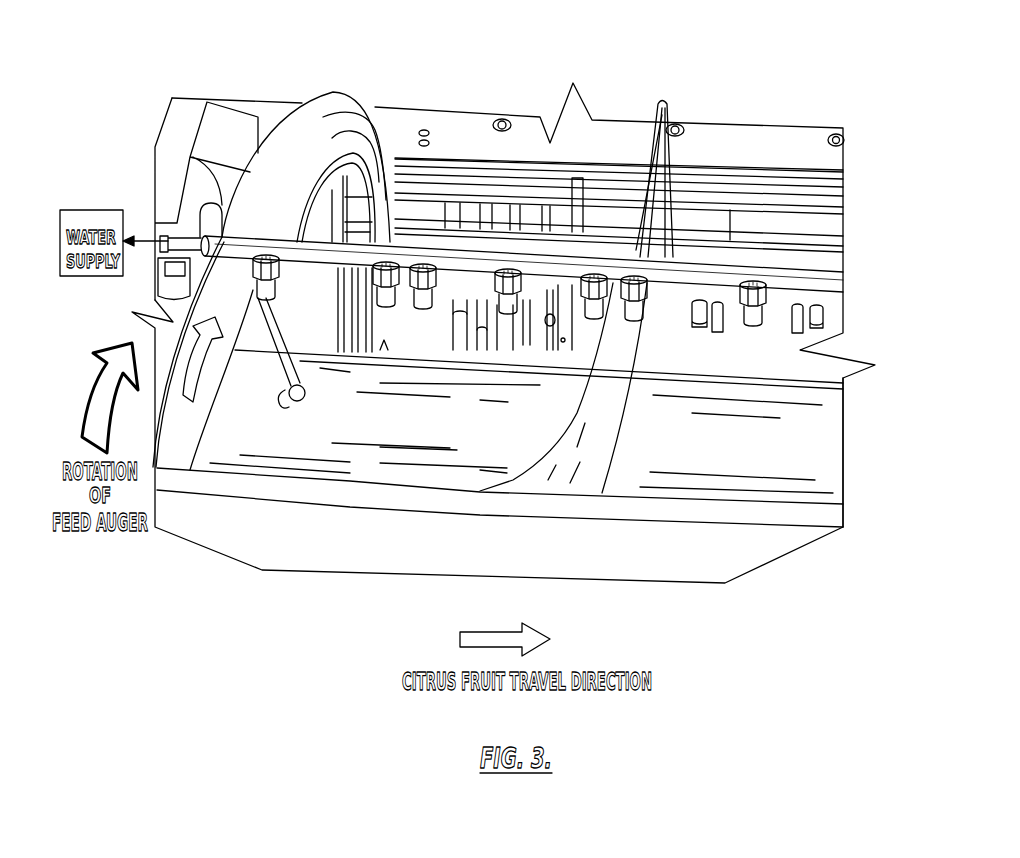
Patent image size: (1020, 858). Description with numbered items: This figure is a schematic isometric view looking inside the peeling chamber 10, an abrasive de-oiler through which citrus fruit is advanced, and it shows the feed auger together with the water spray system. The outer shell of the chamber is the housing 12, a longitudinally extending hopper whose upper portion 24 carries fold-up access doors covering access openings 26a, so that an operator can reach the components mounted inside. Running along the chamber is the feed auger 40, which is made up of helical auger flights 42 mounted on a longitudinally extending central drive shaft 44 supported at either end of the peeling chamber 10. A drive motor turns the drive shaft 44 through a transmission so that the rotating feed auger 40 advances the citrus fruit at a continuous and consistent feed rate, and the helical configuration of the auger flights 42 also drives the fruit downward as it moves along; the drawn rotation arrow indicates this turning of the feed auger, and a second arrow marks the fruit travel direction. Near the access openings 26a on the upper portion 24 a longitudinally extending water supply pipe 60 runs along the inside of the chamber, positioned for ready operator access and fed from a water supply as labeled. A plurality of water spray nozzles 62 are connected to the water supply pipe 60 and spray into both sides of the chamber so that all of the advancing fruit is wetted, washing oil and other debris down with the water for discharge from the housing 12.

The peeling chamber 10 is at (558, 58).
The housing 12 is at (703, 562).
The upper portion 24 is at (433, 193).
The access openings 26a is at (263, 123).
The feed auger 40 is at (668, 102).
The auger flights 42 is at (323, 117).
The drive shaft 44 is at (817, 437).
The water supply pipe 60 is at (790, 303).
The water spray nozzles 62 is at (265, 300).